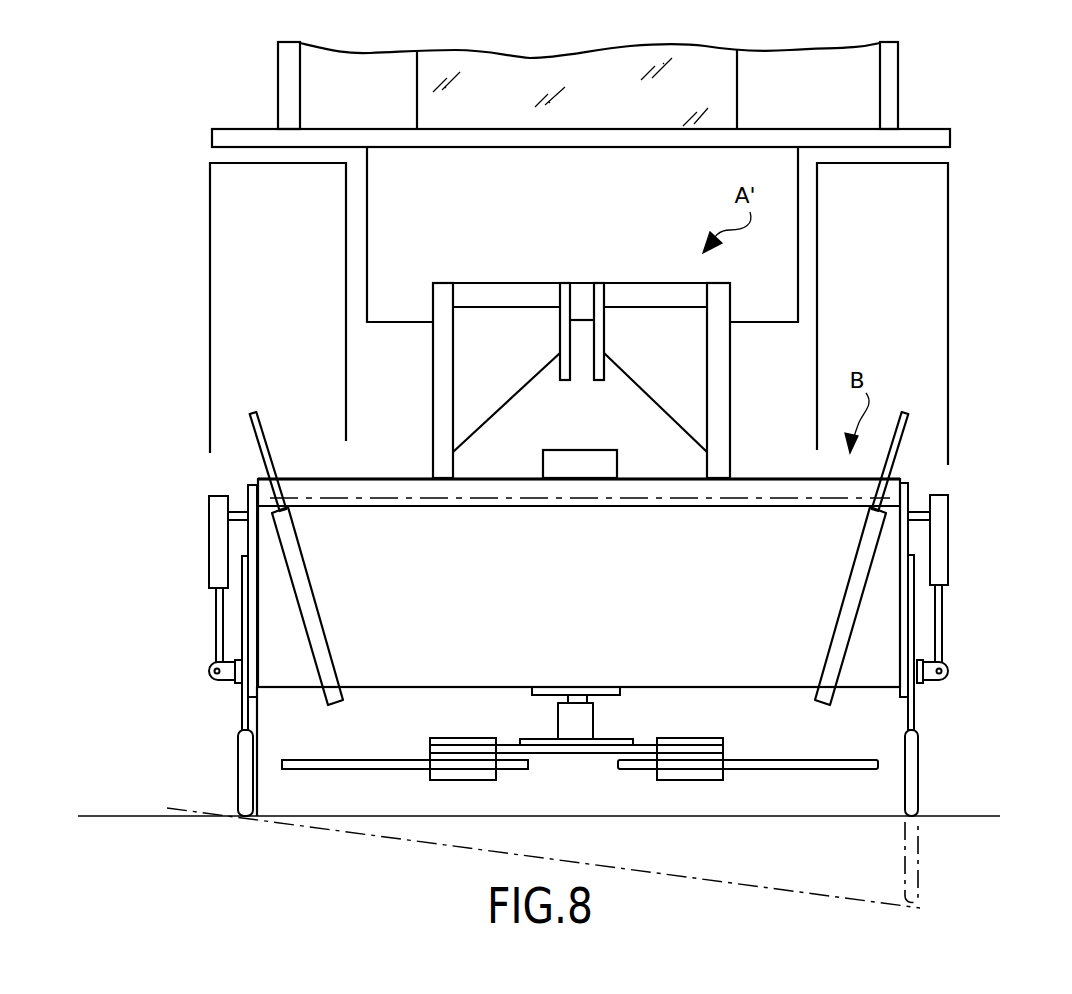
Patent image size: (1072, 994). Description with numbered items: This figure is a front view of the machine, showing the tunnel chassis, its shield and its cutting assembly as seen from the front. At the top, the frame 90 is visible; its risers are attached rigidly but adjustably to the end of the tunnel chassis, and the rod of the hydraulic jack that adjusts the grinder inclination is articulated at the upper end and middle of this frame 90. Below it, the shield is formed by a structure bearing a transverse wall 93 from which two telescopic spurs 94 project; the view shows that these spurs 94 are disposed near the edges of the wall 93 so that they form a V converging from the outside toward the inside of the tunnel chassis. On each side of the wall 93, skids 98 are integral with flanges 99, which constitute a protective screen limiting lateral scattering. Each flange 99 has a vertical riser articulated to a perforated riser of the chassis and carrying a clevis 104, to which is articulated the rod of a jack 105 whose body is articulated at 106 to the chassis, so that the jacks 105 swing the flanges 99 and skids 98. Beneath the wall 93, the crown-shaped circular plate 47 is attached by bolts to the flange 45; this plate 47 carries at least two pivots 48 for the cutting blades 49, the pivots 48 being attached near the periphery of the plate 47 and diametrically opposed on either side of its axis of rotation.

The frame 90 is at (505, 283).
The transverse wall 93 is at (452, 581).
The telescopic spurs 94 is at (322, 656).
The flanges 99 is at (243, 611).
The skids 98 is at (241, 763).
The articulation of jack body 106 is at (920, 511).
The jack 105 is at (944, 562).
The clevis 104 is at (938, 674).
The flange 45 is at (624, 742).
The crown-shaped circular plate 47 is at (502, 745).
The pivots 48 is at (432, 757).
The cutting blades 49 is at (822, 762).